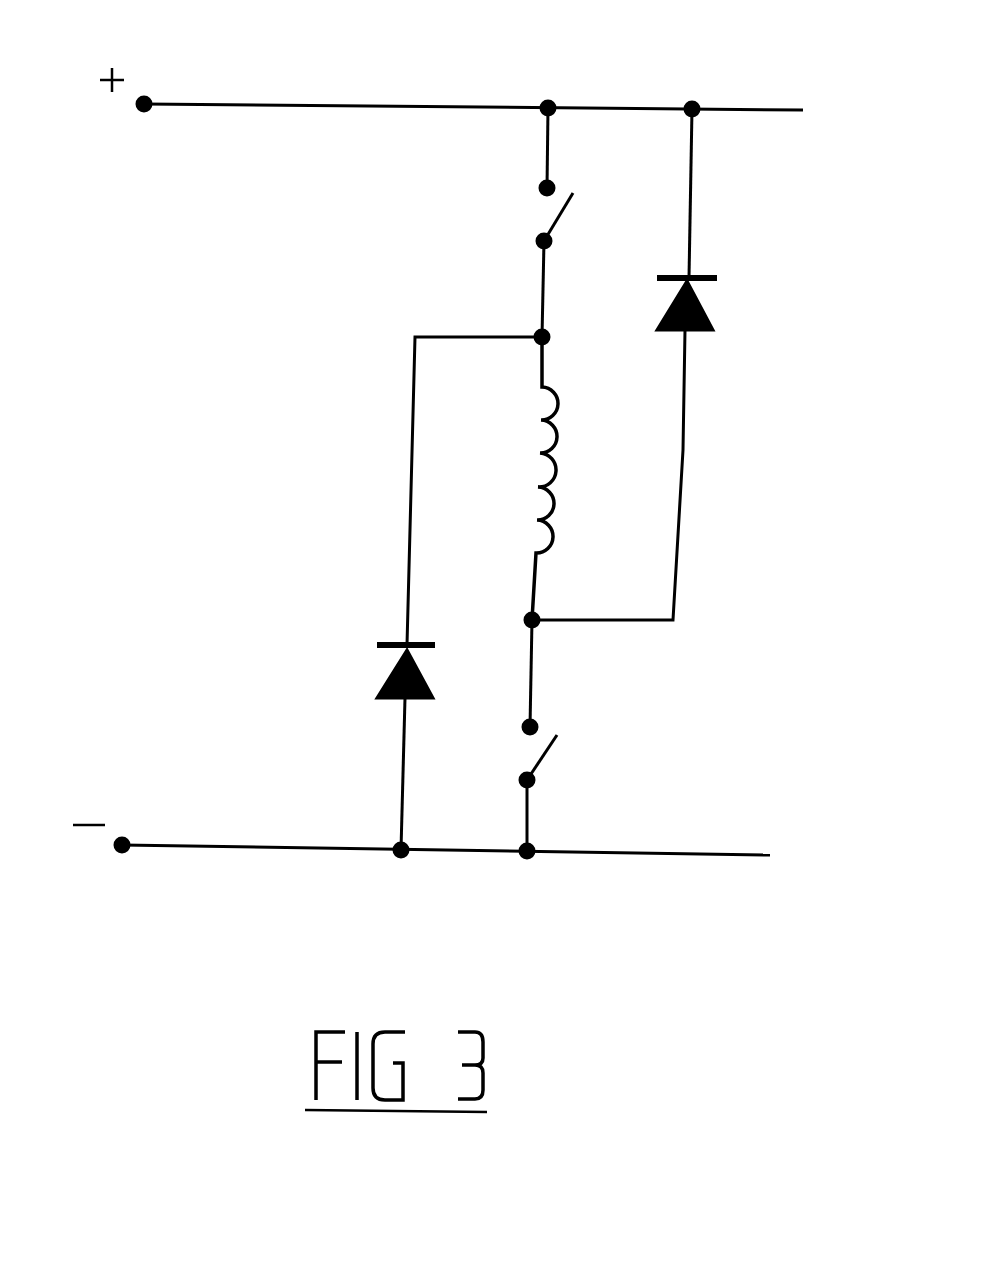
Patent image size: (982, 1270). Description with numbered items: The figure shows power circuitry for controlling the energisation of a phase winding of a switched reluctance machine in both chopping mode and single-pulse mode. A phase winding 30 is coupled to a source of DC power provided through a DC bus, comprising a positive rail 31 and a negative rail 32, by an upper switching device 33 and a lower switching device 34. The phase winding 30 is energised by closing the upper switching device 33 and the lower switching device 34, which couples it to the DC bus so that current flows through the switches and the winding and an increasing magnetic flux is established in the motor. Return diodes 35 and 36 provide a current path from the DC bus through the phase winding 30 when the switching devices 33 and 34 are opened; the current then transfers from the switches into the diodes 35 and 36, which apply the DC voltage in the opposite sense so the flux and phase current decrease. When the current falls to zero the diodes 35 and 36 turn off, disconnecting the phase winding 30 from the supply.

The phase winding 30 is at (560, 436).
The positive rail 31 is at (450, 104).
The negative rail 32 is at (270, 847).
The upper switching device 33 is at (556, 218).
The lower switching device 34 is at (548, 755).
The return diode 35 is at (705, 303).
The return diode 36 is at (390, 665).